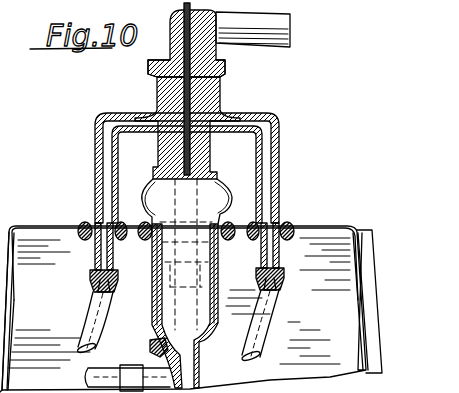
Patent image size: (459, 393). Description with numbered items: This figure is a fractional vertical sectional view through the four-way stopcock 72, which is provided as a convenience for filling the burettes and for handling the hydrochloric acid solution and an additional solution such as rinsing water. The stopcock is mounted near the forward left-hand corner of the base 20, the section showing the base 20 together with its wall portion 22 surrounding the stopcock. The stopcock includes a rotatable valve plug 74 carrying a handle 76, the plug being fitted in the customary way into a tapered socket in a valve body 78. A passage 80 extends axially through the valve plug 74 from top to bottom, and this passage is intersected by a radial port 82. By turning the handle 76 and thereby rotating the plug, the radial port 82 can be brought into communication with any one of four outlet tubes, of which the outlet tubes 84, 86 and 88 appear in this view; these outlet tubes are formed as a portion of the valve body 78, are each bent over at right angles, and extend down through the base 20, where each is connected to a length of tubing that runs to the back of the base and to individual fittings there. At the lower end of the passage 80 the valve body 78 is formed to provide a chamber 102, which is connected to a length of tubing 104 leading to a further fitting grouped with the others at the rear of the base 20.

The base 20 is at (360, 256).
The inner container / liner 22 is at (324, 231).
The four-way stopcock 72 is at (238, 92).
The rotatable valve plug 74 is at (219, 46).
The handle 76 is at (291, 21).
The valve body 78 is at (152, 90).
The passage 80 is at (170, 19).
The radial port 82 is at (160, 139).
The outlet tube 84 is at (104, 128).
The outlet tube 86 is at (213, 261).
The outlet tube 88 is at (280, 154).
The chamber 102 is at (197, 332).
The tubing 104 is at (84, 381).